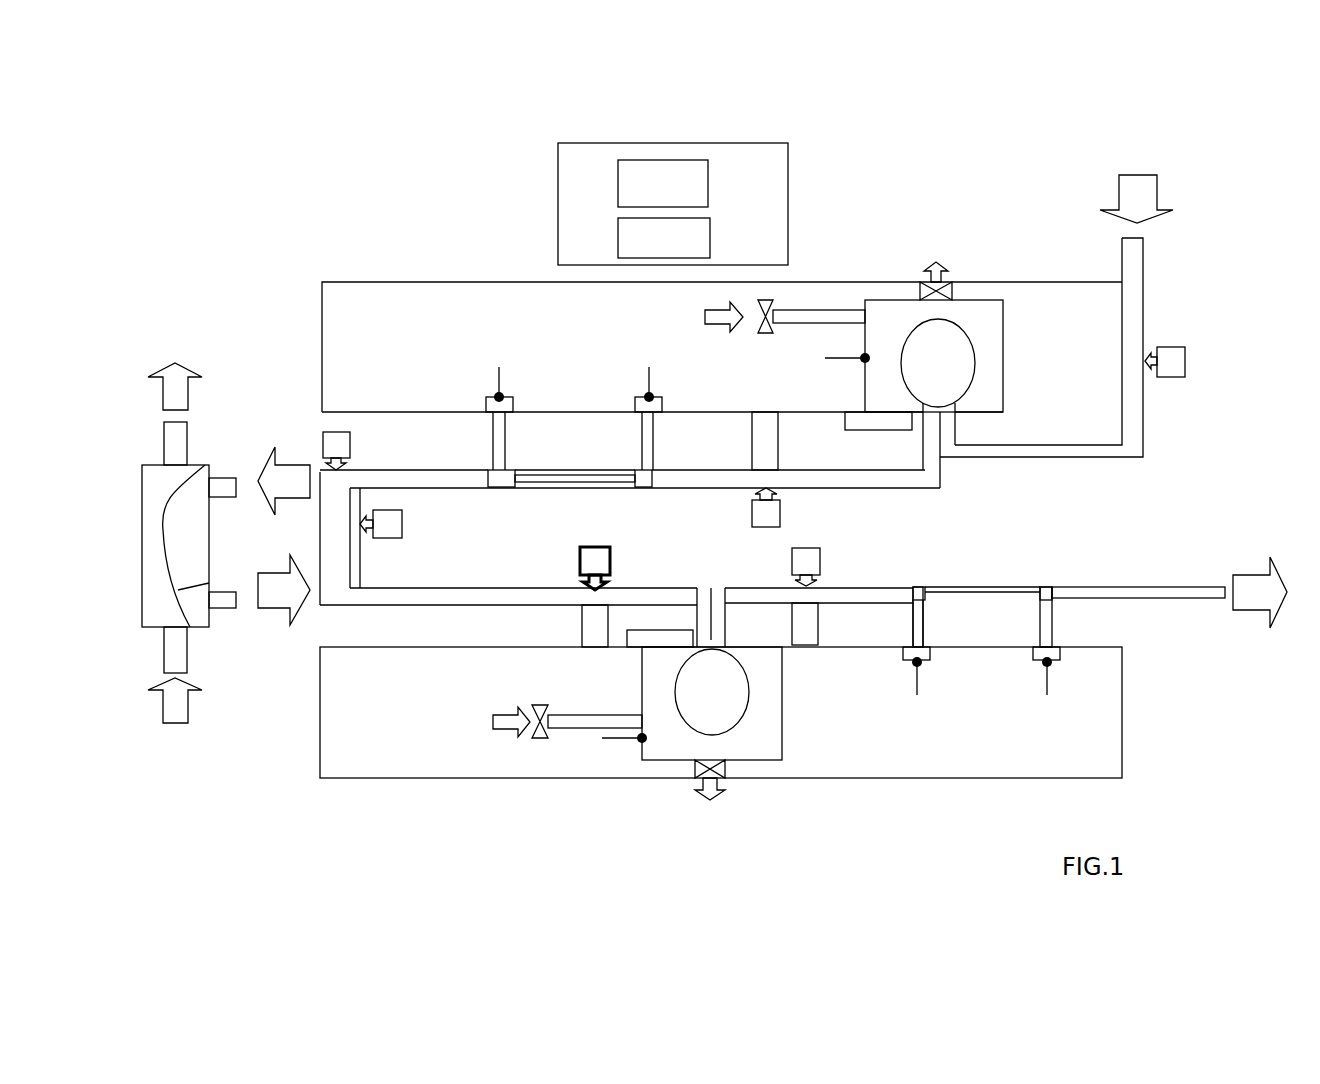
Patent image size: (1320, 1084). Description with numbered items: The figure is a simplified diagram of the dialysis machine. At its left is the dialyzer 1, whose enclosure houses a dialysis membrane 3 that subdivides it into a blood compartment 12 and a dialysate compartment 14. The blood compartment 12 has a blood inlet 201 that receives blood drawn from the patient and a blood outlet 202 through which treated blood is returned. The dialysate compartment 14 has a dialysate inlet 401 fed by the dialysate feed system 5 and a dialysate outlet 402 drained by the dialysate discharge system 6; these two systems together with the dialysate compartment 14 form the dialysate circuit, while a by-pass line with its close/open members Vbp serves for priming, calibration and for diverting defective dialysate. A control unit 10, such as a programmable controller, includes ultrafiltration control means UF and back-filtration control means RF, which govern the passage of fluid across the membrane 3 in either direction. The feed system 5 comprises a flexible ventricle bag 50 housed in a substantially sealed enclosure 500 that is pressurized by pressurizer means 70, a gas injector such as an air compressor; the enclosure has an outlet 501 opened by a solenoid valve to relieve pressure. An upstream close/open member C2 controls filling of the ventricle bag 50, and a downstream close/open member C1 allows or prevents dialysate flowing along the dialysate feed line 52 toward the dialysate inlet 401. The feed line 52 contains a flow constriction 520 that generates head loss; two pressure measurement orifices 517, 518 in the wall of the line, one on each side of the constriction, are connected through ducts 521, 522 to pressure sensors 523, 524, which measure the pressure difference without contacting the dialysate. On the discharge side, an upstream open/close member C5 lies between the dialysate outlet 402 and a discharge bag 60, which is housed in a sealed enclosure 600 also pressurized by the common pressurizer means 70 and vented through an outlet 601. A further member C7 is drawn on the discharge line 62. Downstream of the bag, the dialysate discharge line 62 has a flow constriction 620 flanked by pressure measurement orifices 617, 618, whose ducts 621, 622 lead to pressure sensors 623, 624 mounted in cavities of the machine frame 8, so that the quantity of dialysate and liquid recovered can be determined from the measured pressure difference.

The dialyzer 1 is at (206, 543).
The dialysis membrane 3 is at (209, 582).
The dialysate feed system 5 is at (912, 337).
The dialysate discharge system 6 is at (637, 765).
The frame 8 is at (390, 325).
The control unit 10 is at (558, 200).
The blood compartment 12 is at (162, 608).
The dialysate compartment 14 is at (190, 526).
The ventricle bag 50 is at (940, 372).
The dialysate feed line 52 is at (420, 470).
The discharge bag 60 is at (720, 692).
The dialysate discharge line 62 is at (495, 600).
The pressurizer means 70 is at (818, 305).
The blood inlet 201 is at (178, 648).
The blood outlet 202 is at (183, 447).
The dialysate inlet 401 is at (221, 487).
The dialysate outlet 402 is at (224, 602).
The sealed enclosure 500 is at (875, 397).
The enclosure outlet 501 is at (935, 262).
The pressure measurement orifice 517 is at (650, 483).
The pressure measurement orifice 518 is at (490, 478).
The flow constriction 520 is at (555, 478).
The duct 521 is at (653, 455).
The duct 522 is at (493, 455).
The pressure sensor 523 is at (648, 367).
The pressure sensor 524 is at (498, 367).
The sealed enclosure 600 is at (760, 735).
The enclosure outlet 601 is at (742, 748).
The pressure measurement orifice 617 is at (915, 597).
The pressure measurement orifice 618 is at (1043, 585).
The flow constriction 620 is at (970, 585).
The duct 621 is at (920, 605).
The duct 622 is at (1047, 610).
The pressure sensor 623 is at (918, 683).
The pressure sensor 624 is at (1047, 673).
The ultrafiltration control means UF is at (663, 183).
The back-filtration control means RF is at (664, 238).
The close/open member Vbp is at (325, 437).
The downstream close/open member C1 is at (775, 518).
The upstream close/open member C2 is at (1175, 347).
The upstream open/close member C5 is at (580, 563).
The sensor C7 is at (815, 563).